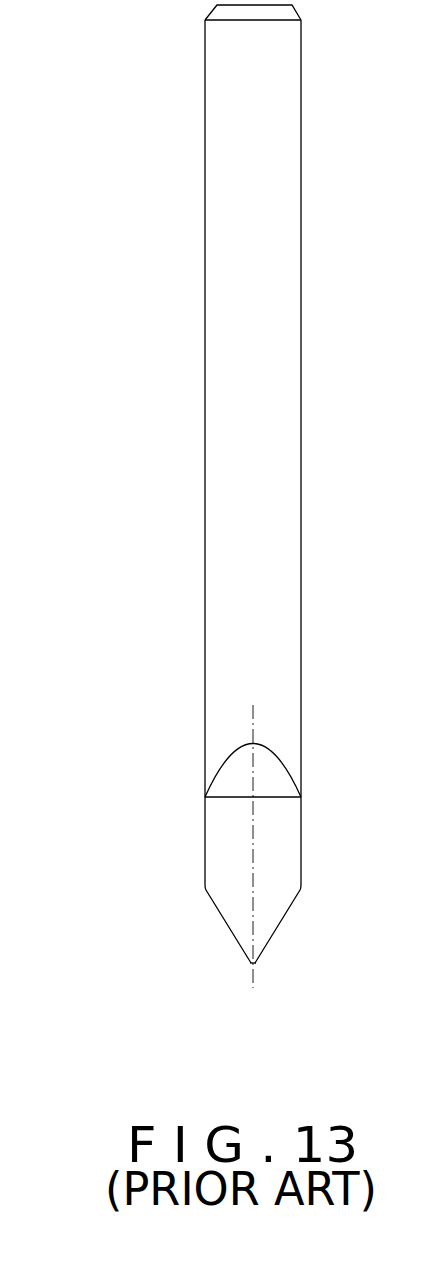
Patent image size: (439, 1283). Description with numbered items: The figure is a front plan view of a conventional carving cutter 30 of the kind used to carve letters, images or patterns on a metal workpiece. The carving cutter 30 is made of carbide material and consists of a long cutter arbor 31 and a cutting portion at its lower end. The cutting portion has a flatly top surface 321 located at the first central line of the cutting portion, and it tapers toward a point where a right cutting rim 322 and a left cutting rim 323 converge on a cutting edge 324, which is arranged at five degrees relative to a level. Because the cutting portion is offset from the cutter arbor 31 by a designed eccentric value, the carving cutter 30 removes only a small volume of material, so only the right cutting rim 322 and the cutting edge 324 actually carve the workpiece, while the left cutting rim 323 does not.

The carving cutter 30 is at (218, 534).
The cutter arbor 31 is at (282, 520).
The flatly top surface 321 is at (268, 884).
The right cutting rim 322 is at (275, 933).
The left cutting rim 323 is at (232, 928).
The cutting edge 324 is at (252, 965).